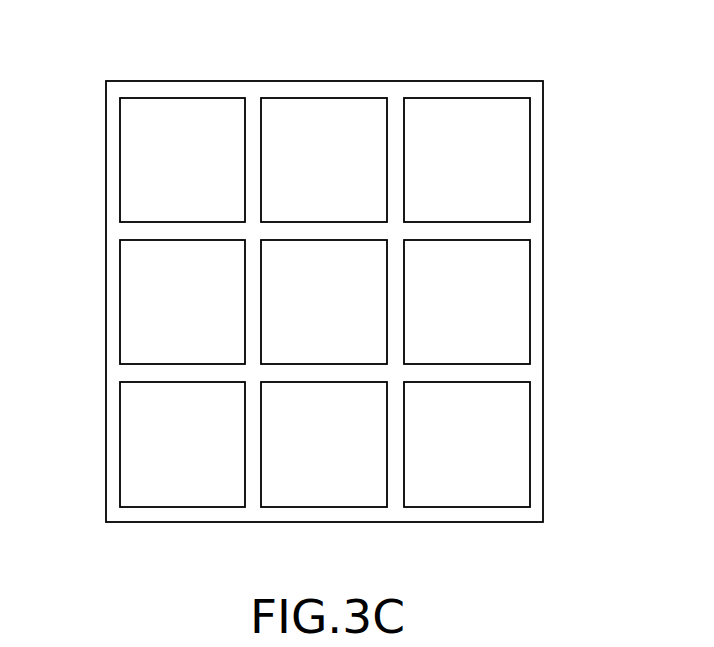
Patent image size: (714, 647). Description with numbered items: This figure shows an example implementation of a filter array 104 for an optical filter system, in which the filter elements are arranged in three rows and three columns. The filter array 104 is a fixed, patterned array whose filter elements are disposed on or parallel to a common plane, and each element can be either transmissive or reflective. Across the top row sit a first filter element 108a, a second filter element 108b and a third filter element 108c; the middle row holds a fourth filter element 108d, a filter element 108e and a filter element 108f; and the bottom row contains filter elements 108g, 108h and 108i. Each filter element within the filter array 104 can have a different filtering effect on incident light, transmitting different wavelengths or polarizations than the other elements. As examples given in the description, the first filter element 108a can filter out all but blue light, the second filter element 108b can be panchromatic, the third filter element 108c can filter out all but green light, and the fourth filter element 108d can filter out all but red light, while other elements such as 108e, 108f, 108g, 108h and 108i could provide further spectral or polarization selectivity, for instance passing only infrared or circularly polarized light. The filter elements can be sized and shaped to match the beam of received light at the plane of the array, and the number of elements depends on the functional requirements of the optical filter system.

The filter array 104 is at (245, 85).
The first filter element 108a is at (170, 117).
The second filter element 108b is at (340, 117).
The third filter element 108c is at (485, 117).
The fourth filter element 108d is at (144, 336).
The filter element 108e is at (308, 311).
The filter element 108f is at (504, 282).
The filter element 108g is at (133, 488).
The filter element 108h is at (303, 488).
The filter element 108i is at (473, 488).